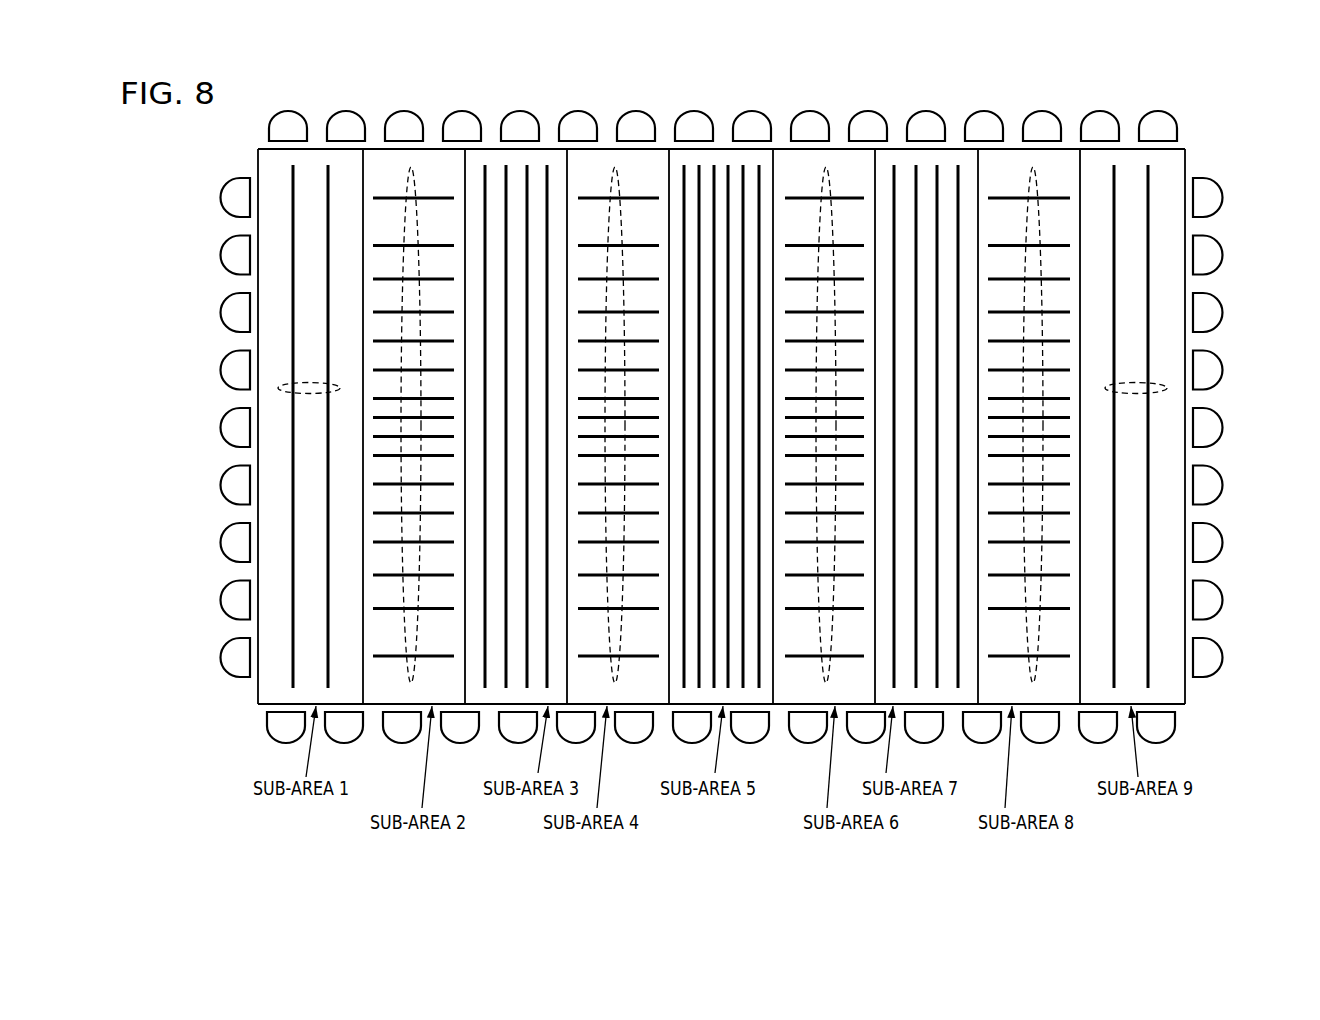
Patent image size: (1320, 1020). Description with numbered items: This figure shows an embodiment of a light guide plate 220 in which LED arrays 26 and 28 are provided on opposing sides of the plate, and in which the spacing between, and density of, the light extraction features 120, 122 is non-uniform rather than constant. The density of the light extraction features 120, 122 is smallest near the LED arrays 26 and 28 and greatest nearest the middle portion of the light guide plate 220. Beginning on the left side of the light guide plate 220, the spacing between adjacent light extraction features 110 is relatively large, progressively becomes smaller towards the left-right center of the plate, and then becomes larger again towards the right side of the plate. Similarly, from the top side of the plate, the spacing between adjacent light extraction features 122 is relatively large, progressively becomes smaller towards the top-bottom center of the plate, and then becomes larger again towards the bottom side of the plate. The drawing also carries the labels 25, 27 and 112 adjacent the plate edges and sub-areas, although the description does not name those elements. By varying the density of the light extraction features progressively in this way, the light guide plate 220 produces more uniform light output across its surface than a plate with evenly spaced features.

The light guide plate 220 is at (1260, 97).
The side edge of panel 25 is at (257, 690).
The LED array 26 is at (221, 243).
The top/bottom edge of panel 27 is at (1183, 148).
The LED array 28 is at (1118, 114).
The light extraction features 110 is at (315, 169).
The sub-area with horizontal strips 112 is at (432, 172).
The light extraction features 122 is at (412, 172).
The light extraction features 120 is at (282, 388).